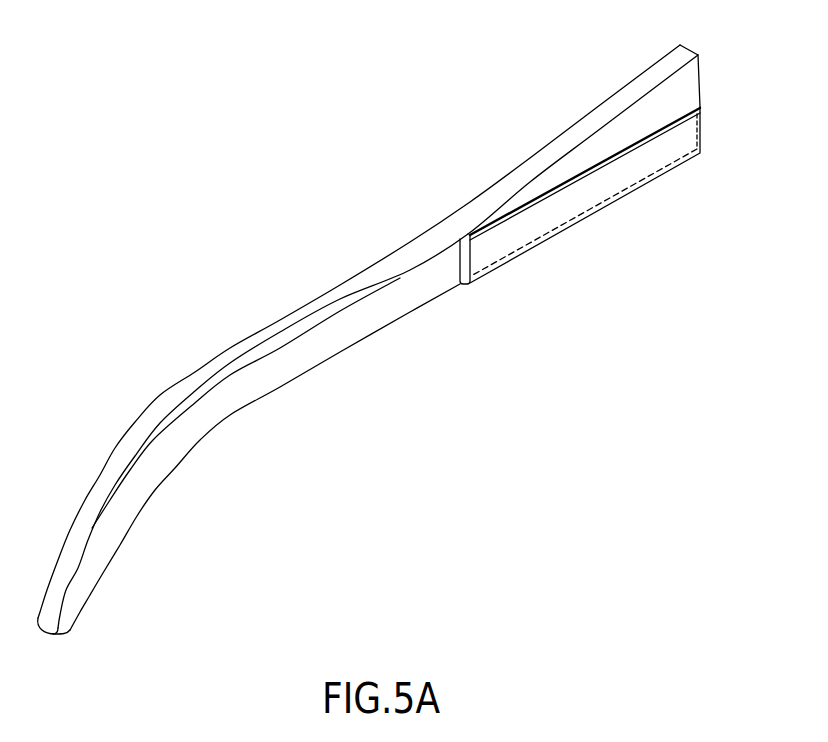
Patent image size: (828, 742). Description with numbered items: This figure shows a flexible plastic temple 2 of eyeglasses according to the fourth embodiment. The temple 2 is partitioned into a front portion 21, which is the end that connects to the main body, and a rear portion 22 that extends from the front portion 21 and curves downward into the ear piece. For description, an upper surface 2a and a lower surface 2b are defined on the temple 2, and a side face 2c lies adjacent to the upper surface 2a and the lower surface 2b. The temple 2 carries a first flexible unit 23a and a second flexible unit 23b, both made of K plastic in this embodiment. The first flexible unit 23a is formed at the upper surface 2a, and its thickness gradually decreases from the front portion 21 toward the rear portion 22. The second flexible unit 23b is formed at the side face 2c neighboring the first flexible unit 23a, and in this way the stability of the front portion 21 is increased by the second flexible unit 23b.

The flexible plastic temple 2 is at (263, 276).
The upper surface 2a is at (480, 235).
The lower surface 2b is at (452, 292).
The side face 2c is at (450, 270).
The front portion 21 is at (600, 188).
The rear portion 22 is at (355, 330).
The first flexible unit 23a is at (647, 113).
The second flexible unit 23b is at (667, 152).